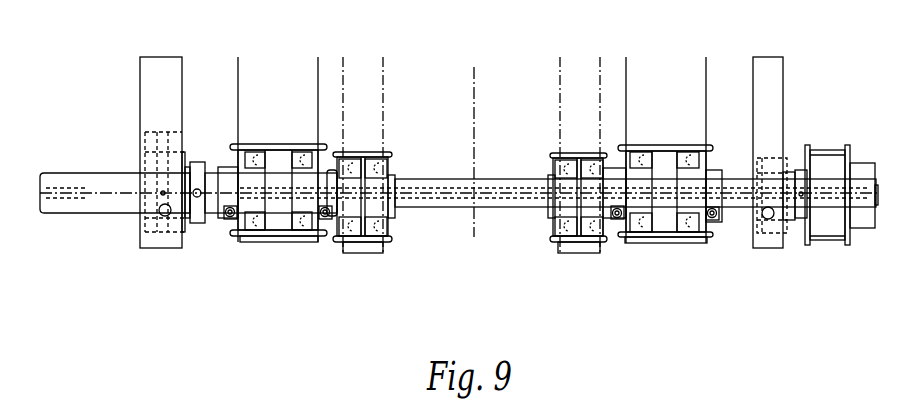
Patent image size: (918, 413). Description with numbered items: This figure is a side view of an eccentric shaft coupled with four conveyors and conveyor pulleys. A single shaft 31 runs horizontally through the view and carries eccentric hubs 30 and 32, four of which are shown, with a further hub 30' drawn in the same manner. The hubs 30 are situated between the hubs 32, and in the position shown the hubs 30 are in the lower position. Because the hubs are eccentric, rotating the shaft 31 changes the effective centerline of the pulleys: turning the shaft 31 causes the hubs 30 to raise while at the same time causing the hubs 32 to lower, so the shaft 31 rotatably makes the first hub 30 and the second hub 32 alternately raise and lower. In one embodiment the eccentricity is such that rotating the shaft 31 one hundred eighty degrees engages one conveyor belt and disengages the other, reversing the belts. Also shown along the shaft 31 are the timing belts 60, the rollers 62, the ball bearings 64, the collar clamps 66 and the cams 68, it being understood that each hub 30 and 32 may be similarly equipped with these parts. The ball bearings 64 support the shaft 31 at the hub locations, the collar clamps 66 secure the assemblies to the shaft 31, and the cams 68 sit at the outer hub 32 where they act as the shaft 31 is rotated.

The eccentric hub 30 is at (577, 202).
The eccentric hub 30' is at (394, 173).
The shaft 31 is at (878, 188).
The eccentric hub 32 is at (228, 222).
The timing belt 60 is at (240, 243).
The roller 62 is at (275, 242).
The ball bearing 64 is at (645, 243).
The collar clamp 66 is at (714, 228).
The cam 68 is at (622, 164).